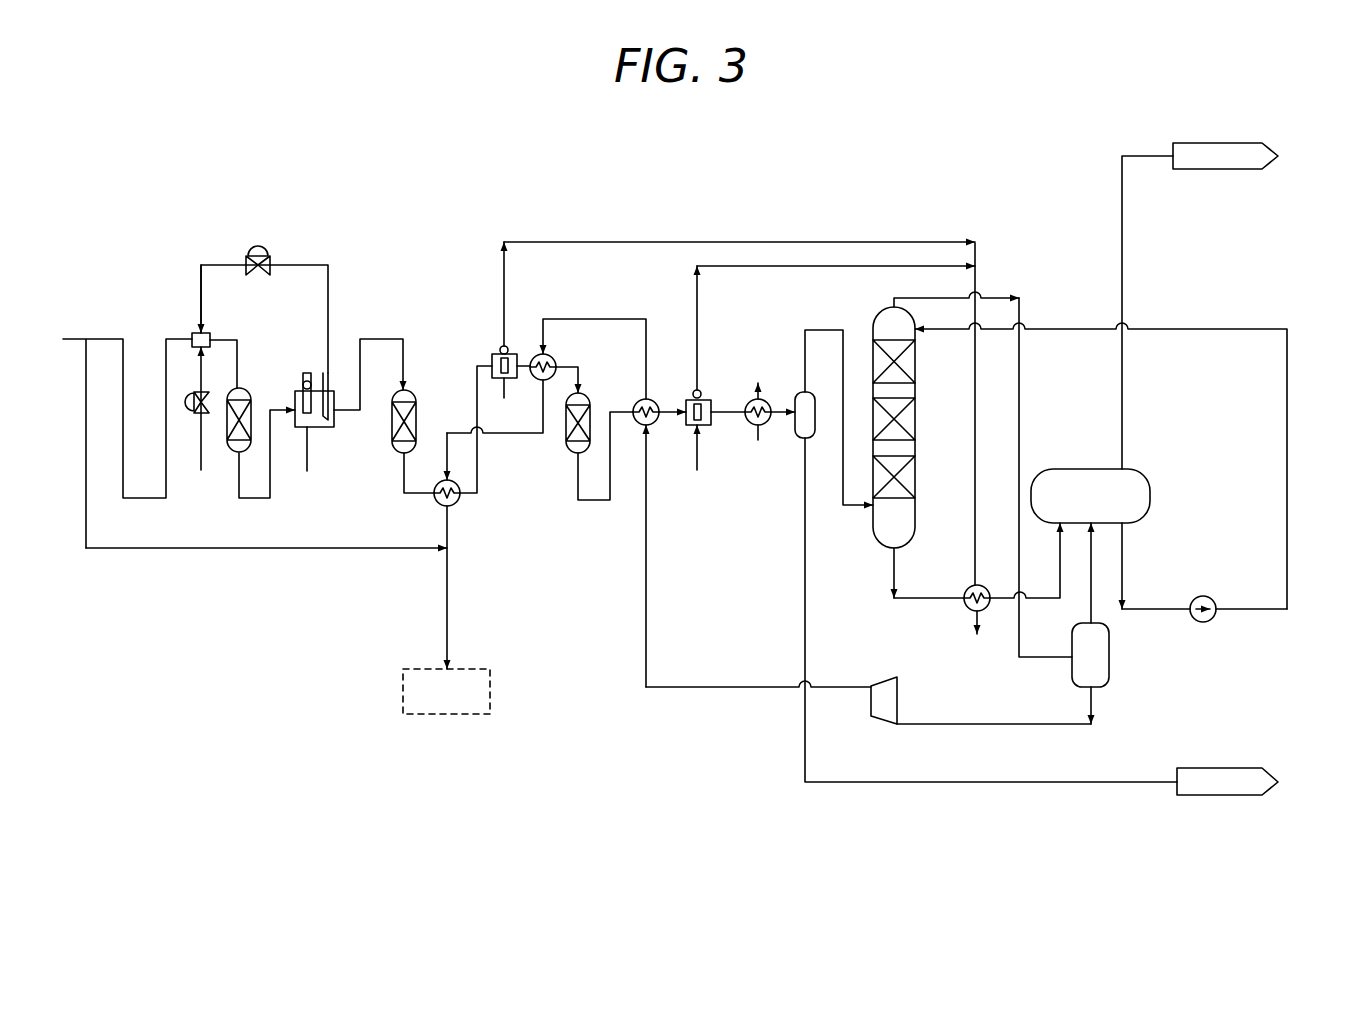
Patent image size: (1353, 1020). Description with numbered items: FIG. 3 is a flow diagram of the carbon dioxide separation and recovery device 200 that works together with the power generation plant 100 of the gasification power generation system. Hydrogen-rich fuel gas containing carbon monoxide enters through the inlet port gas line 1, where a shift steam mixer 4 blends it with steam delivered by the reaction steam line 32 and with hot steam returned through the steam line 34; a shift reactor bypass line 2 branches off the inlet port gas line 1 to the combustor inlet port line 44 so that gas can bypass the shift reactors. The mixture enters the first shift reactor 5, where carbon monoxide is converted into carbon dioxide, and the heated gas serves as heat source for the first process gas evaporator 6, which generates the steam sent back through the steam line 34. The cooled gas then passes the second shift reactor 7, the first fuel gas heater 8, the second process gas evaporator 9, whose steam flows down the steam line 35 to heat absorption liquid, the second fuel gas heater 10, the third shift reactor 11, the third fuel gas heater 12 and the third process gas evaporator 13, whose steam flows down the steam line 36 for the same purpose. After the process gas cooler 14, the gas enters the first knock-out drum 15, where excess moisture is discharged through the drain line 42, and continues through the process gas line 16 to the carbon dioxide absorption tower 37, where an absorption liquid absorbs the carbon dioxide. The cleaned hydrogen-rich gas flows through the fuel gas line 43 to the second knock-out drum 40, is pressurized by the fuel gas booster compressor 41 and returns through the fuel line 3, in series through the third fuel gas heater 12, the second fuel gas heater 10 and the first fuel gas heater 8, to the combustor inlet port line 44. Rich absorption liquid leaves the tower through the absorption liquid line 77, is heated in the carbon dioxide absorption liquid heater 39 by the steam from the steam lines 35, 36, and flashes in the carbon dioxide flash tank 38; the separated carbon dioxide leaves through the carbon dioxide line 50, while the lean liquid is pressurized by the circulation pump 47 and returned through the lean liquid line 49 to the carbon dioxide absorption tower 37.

The inlet port gas line 1 is at (104, 338).
The shift reactor bypass line 2 is at (148, 550).
The fuel line 3 is at (646, 517).
The shift steam mixer 4 is at (198, 318).
The first shift reactor 5 is at (250, 424).
The first process gas evaporator 6 is at (334, 420).
The second shift reactor 7 is at (416, 420).
The first fuel gas heater 8 is at (458, 504).
The second process gas evaporator 9 is at (492, 364).
The second fuel gas heater 10 is at (556, 362).
The third shift reactor 11 is at (567, 438).
The third fuel gas heater 12 is at (650, 398).
The third process gas evaporator 13 is at (714, 426).
The process gas cooler 14 is at (762, 392).
The first knock-out drum 15 is at (792, 426).
The process gas line 16 is at (828, 330).
The reaction steam line 32 is at (200, 464).
The steam line 34 is at (331, 314).
The steam line 35 is at (505, 300).
The steam line 36 is at (700, 343).
The carbon dioxide absorption tower 37 is at (916, 370).
The carbon dioxide flash tank 38 is at (1150, 491).
The carbon dioxide absorption liquid heater 39 is at (985, 588).
The second knock-out drum 40 is at (1110, 660).
The fuel gas booster compressor 41 is at (879, 684).
The drain line 42 is at (1128, 782).
The fuel gas line 43 is at (1020, 413).
The combustor inlet port line 44 is at (448, 628).
The reflux pump 47 is at (1207, 595).
The lean liquid line 49 is at (1287, 394).
The carbon dioxide line 50 is at (1123, 255).
The absorption liquid line 77 is at (937, 598).
The power generation plant 100 is at (491, 696).
The carbon dioxide separation and recovery device 200 is at (731, 184).